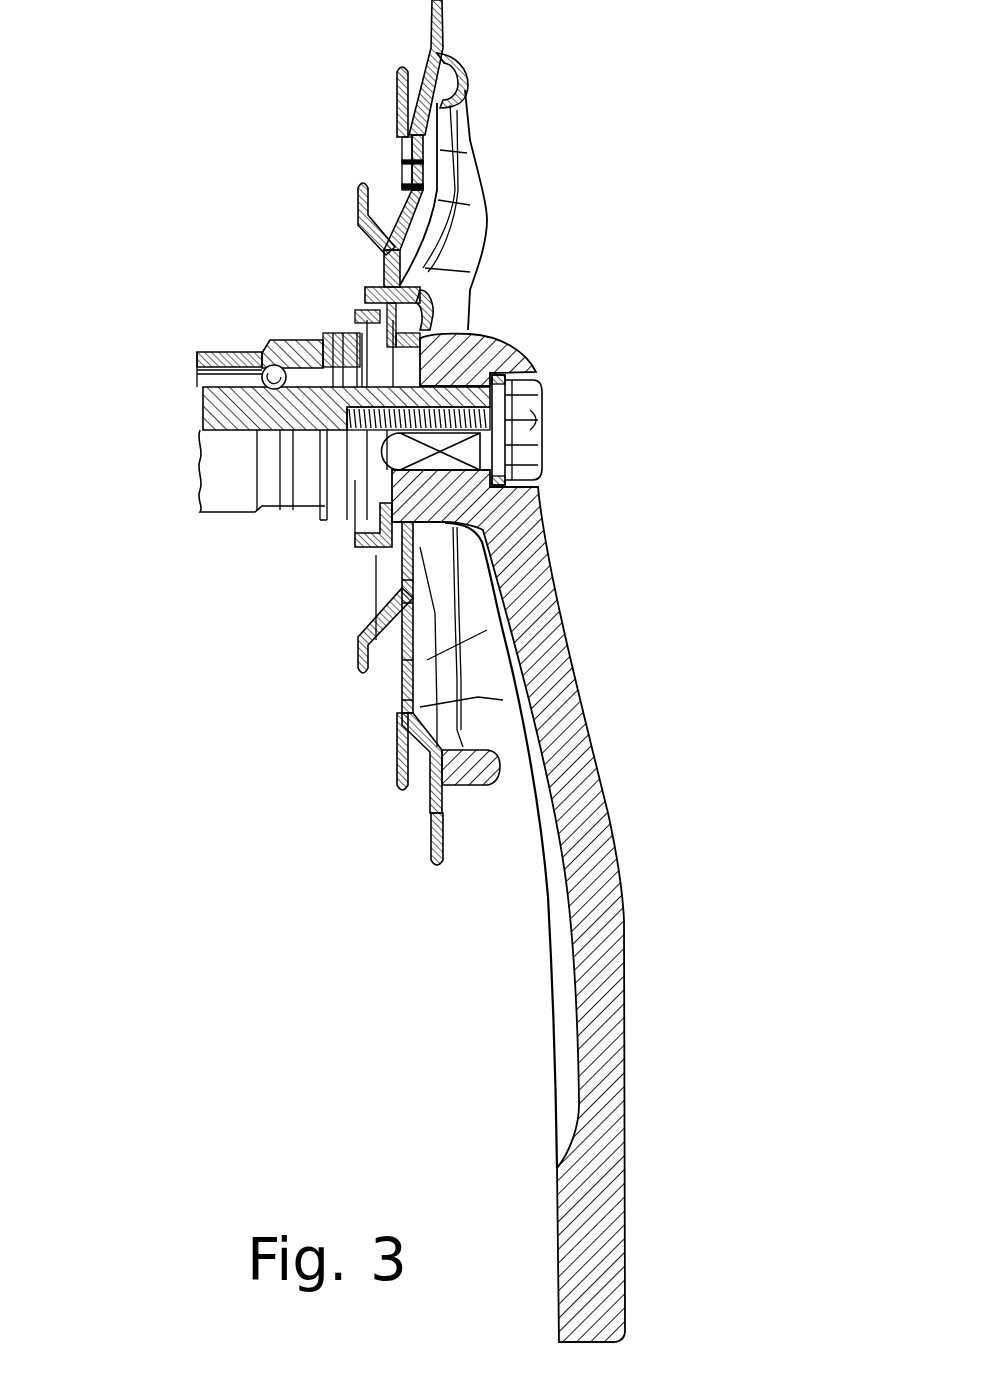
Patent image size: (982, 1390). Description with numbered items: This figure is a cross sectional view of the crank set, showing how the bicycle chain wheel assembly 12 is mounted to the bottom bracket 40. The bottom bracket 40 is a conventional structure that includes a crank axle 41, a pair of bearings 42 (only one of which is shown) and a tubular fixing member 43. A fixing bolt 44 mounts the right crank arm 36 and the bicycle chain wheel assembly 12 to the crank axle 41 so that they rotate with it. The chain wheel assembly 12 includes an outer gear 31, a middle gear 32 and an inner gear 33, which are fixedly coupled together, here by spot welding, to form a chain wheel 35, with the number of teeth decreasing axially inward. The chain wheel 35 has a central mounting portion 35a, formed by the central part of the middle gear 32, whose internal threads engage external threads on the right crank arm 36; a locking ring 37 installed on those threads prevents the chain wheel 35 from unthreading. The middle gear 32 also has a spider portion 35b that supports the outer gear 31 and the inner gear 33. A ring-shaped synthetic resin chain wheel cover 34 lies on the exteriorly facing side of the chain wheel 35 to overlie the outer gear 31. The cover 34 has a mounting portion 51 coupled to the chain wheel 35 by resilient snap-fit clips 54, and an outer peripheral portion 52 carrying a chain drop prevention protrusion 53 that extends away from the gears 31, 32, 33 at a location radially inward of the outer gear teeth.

The bicycle chain wheel assembly 12 is at (569, 136).
The outer gear 31 is at (430, 845).
The middle gear 32 is at (380, 743).
The inner gear 33 is at (357, 662).
The chain wheel cover 34 is at (357, 640).
The chain wheel 35 is at (207, 648).
The central mounting portion 35a is at (455, 527).
The spider portion 35b is at (530, 712).
The right crank arm 36 is at (623, 878).
The locking ring 37 is at (357, 537).
The bottom bracket 40 is at (243, 344).
The crank axle 41 is at (217, 407).
The bearings 42 is at (272, 372).
The tubular fixing member 43 is at (195, 351).
The fixing bolt 44 is at (545, 417).
The mounting portion 51 is at (470, 310).
The outer peripheral portion 52 is at (465, 57).
The chain drop prevention protrusion 53 is at (487, 790).
The clips 54 is at (372, 290).